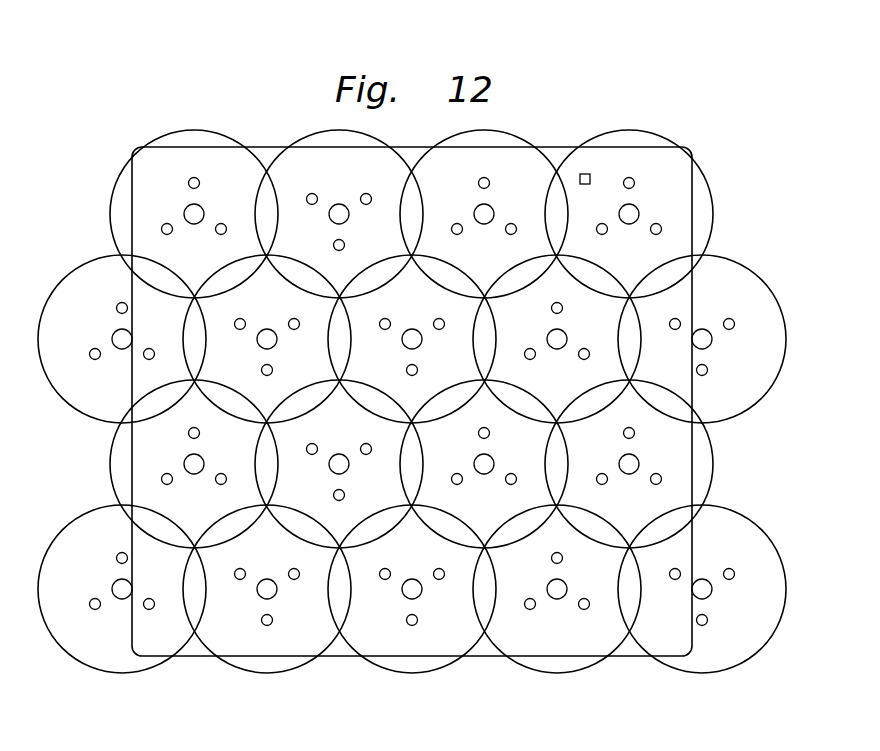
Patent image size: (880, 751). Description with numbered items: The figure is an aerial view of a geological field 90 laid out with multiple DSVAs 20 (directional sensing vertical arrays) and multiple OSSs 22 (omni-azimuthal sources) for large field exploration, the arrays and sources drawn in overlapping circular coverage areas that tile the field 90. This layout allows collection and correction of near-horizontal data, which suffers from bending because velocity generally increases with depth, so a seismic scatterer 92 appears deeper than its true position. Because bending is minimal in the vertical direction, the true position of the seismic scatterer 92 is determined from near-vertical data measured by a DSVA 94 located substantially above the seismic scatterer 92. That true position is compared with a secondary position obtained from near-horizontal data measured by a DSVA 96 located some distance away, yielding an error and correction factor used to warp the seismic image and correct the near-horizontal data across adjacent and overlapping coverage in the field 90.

The geological field 90 is at (247, 92).
The DSVA 20 is at (746, 299).
The OSS 22 is at (637, 207).
The seismic scatterer 92 is at (585, 173).
The DSVA located substantially above the seismic scatterer 94 is at (630, 178).
The DSVA located some distance away from the seismic scatterer 96 is at (262, 636).